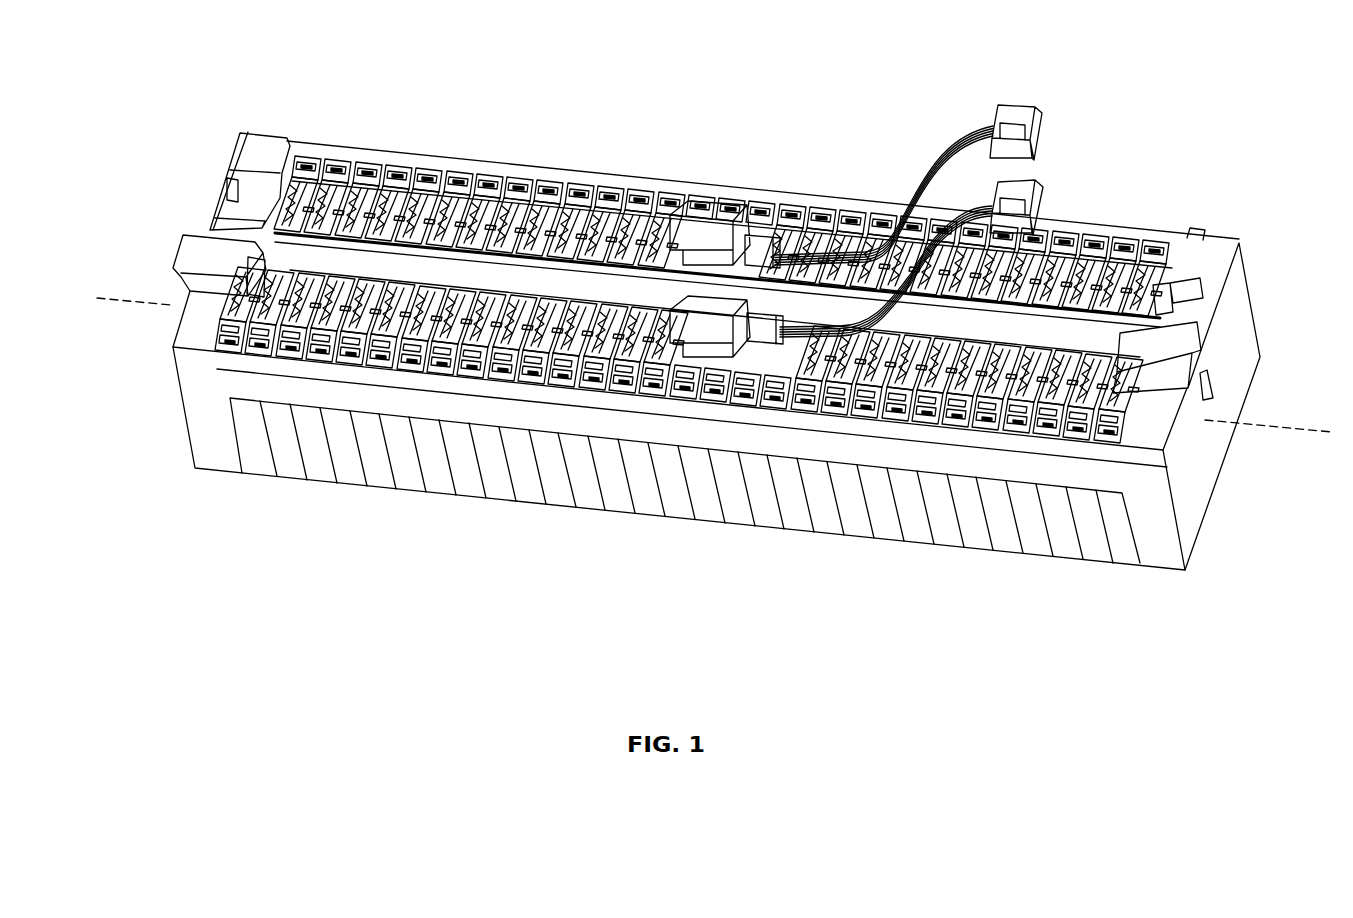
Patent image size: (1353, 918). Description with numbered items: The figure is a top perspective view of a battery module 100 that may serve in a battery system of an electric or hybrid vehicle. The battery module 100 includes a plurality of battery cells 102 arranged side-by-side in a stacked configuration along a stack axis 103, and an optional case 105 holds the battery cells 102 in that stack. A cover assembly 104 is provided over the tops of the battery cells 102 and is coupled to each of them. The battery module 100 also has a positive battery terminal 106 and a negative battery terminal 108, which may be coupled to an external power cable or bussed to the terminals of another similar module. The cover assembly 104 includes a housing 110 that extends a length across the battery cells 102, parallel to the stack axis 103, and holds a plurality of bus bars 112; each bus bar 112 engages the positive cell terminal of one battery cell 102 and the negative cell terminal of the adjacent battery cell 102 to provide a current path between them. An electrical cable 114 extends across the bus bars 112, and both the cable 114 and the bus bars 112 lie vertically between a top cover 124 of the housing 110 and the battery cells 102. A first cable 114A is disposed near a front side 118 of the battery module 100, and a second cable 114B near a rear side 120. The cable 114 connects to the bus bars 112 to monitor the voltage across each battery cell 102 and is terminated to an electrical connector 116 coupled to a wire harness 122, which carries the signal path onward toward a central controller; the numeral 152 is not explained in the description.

The battery module 100 is at (926, 94).
The battery cells 102 is at (623, 500).
The stack axis 103 is at (1268, 423).
The cover assembly 104 is at (325, 158).
The case 105 is at (202, 392).
The positive battery terminal 106 is at (1165, 352).
The negative battery terminal 108 is at (199, 250).
The housing 110 is at (720, 201).
The bus bars 112 is at (657, 449).
The electrical cable 114 is at (681, 336).
The first cable 114A is at (444, 325).
The second cable 114B is at (567, 217).
The electrical connector 116 is at (723, 318).
The front side 118 is at (957, 457).
The rear side 120 is at (1240, 251).
The wire harness 122 is at (857, 325).
The top cover 124 is at (327, 322).
The connector opening 152 is at (319, 445).